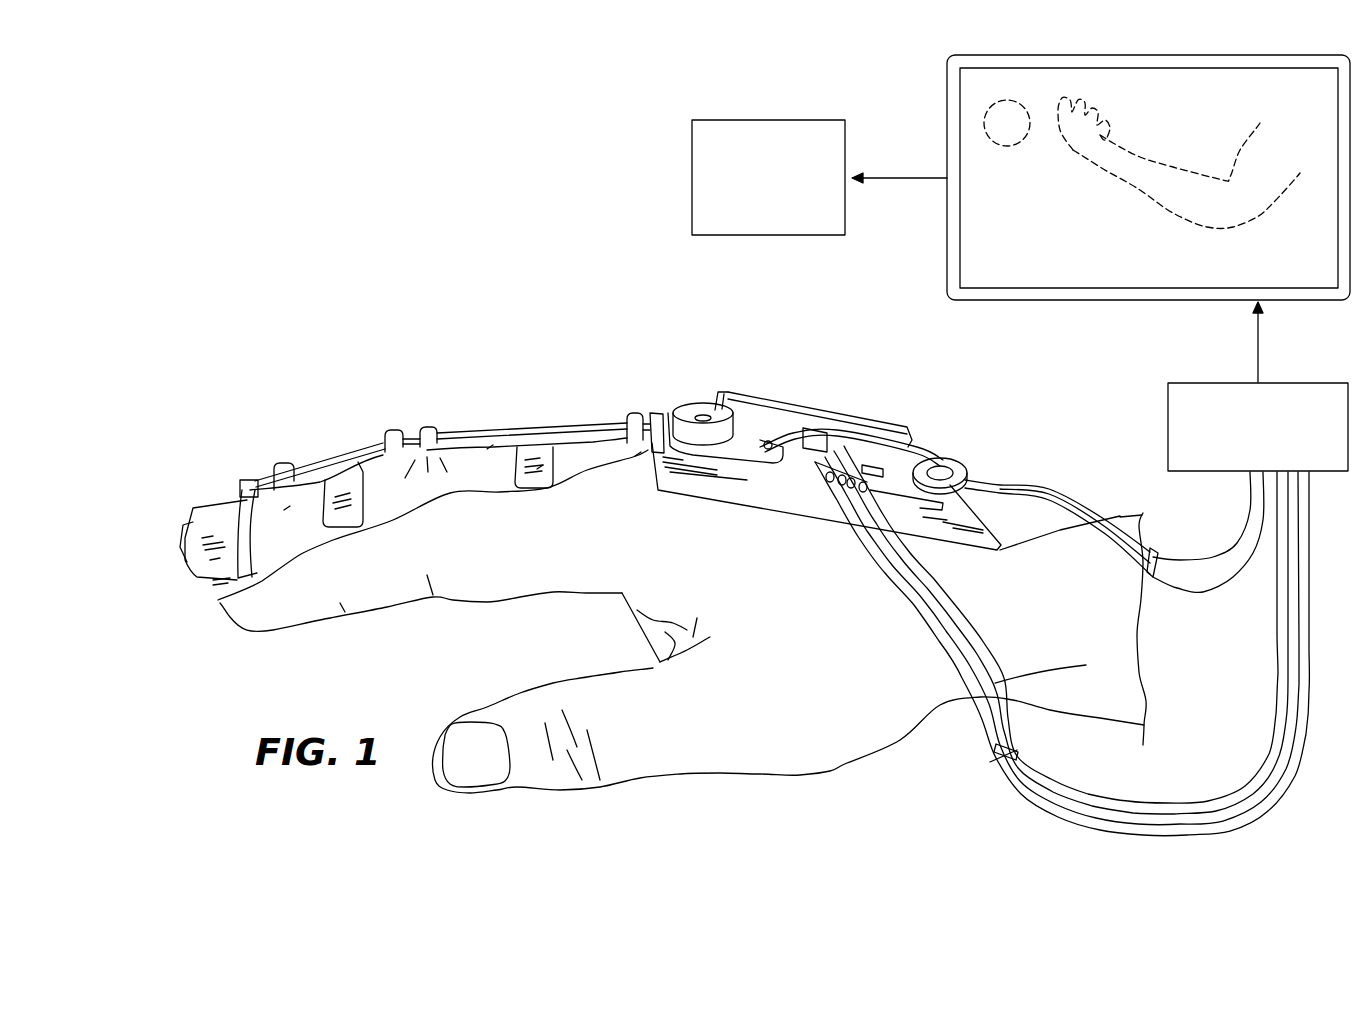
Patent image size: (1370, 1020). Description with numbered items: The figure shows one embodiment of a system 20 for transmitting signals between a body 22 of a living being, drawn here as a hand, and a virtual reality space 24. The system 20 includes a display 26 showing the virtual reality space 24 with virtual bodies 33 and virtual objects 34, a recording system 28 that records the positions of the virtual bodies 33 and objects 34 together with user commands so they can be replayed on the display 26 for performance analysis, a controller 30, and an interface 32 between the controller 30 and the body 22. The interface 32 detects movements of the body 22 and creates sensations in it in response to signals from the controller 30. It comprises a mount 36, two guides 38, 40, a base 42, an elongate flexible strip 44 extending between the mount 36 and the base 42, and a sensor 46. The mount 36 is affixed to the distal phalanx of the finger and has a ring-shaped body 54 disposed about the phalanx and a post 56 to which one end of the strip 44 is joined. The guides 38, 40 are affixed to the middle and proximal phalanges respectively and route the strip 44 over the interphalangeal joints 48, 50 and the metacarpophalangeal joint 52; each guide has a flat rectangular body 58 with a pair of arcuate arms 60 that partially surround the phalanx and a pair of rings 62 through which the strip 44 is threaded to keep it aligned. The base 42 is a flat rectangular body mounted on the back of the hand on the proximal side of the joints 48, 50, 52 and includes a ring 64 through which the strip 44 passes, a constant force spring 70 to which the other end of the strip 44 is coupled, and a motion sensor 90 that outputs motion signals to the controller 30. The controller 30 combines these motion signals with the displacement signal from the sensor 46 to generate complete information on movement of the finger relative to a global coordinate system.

The system 20 is at (470, 200).
The body 22 is at (840, 723).
The virtual reality space 24 is at (1135, 258).
The display 26 is at (993, 242).
The recording system 28 is at (707, 125).
The controller 30 is at (1336, 472).
The interface 32 is at (440, 350).
The virtual bodies 33 is at (1270, 205).
The virtual objects 34 is at (985, 120).
The mount 36 is at (207, 513).
The guide 38 is at (333, 480).
The guide 40 is at (540, 445).
The base 42 is at (975, 537).
The strip 44 is at (258, 478).
The sensor 46 is at (788, 407).
The interphalangeal joint 48 is at (287, 508).
The interphalangeal joint 50 is at (393, 455).
The metacarpophalangeal joint 52 is at (638, 454).
The ring-shaped body 54 is at (223, 560).
The post 56 is at (240, 483).
The body 58 is at (490, 447).
The arcuate arms 60 is at (540, 467).
The rings 62 is at (430, 430).
The ring 64 is at (657, 415).
The spring 70 is at (740, 440).
The motion sensor 90 is at (910, 492).